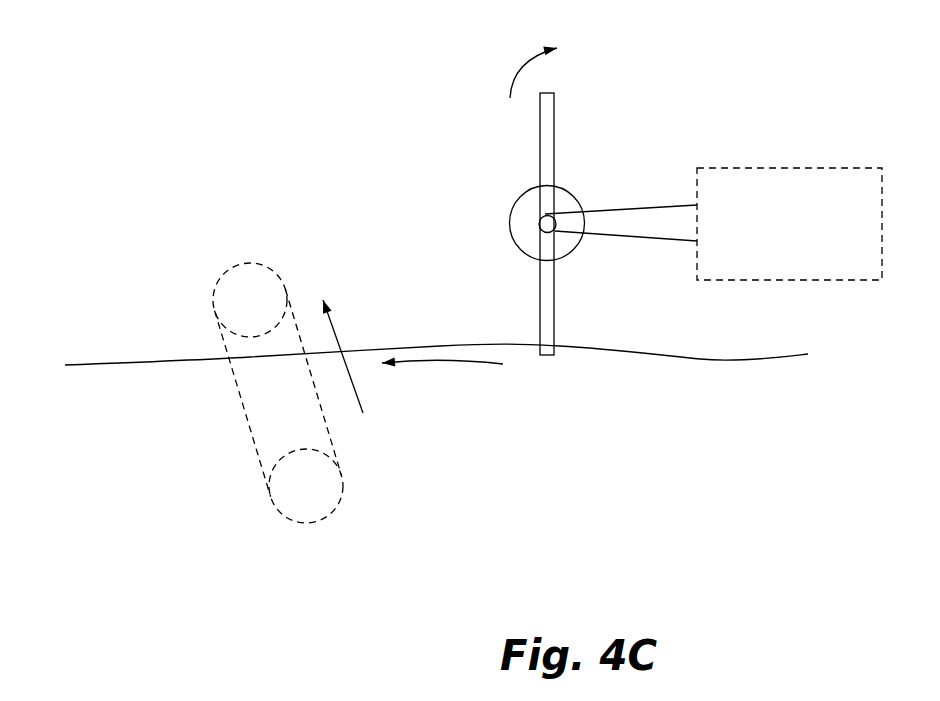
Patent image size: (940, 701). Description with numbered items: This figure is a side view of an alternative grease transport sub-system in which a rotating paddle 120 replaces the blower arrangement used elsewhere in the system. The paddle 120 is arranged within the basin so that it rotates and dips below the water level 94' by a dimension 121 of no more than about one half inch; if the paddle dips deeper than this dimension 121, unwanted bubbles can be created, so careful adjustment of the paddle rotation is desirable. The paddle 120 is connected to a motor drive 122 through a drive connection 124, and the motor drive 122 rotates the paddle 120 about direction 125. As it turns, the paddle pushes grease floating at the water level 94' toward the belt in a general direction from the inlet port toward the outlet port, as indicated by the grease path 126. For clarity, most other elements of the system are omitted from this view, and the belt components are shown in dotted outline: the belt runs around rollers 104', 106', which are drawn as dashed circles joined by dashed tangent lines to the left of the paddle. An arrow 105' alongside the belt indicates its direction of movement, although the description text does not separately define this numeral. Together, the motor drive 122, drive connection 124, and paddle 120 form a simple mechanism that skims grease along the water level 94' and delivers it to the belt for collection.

The water level 94' is at (436, 373).
The roller 104' is at (277, 365).
The direction of movement arrow 105' is at (379, 370).
The roller 106' is at (333, 500).
The rotating paddle 120 is at (554, 130).
The dimension 121 is at (565, 363).
The motor drive 122 is at (768, 167).
The drive connection 124 is at (621, 209).
The direction 125 is at (518, 60).
The grease path 126 is at (453, 363).